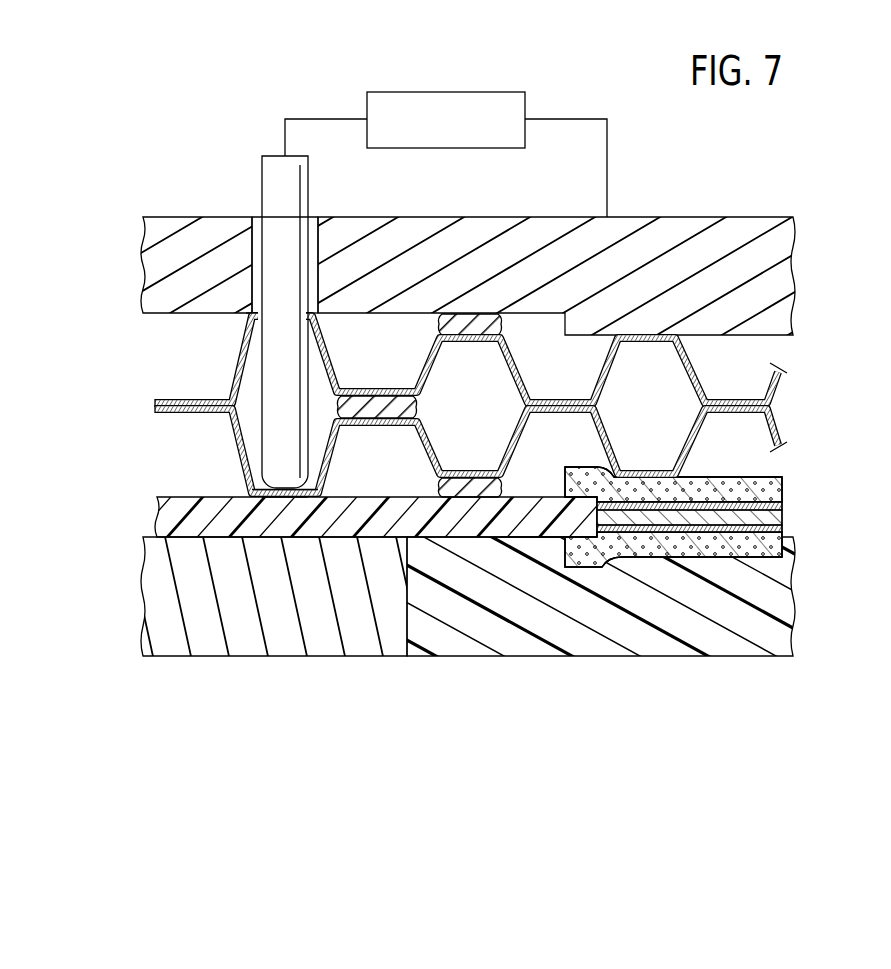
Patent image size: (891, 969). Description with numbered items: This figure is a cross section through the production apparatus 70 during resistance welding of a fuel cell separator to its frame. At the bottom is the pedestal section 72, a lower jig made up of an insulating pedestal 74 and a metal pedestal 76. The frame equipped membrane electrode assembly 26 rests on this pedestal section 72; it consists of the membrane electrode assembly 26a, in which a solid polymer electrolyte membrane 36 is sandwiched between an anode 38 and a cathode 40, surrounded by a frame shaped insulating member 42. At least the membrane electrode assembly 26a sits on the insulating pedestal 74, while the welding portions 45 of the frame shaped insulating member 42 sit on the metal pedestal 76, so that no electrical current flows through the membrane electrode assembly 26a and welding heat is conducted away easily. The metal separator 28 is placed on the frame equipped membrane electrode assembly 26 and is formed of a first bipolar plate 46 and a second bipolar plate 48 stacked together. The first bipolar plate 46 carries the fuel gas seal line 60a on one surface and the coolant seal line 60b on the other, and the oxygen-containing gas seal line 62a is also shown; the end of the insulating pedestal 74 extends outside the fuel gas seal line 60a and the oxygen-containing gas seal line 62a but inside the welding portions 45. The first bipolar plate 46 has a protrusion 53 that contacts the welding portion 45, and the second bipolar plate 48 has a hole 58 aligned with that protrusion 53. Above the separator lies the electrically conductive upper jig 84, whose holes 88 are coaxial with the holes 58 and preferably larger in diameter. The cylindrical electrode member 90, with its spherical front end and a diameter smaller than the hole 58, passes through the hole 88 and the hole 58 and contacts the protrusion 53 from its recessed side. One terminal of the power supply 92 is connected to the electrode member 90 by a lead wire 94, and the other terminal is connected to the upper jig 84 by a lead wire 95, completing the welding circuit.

The production apparatus 70 is at (798, 146).
The upper jig 84 is at (697, 218).
The holes 88 is at (312, 250).
The electrode member 90 is at (274, 156).
The power supply 92 is at (498, 100).
The lead wire 94 is at (353, 118).
The lead wire 95 is at (558, 118).
The metal separator 28 is at (426, 509).
The second bipolar plate 48 is at (230, 382).
The first bipolar plate 46 is at (230, 428).
The hole 58 is at (302, 318).
The protrusion 53 is at (287, 490).
The welding portion 45 is at (286, 493).
The fuel gas seal line 60a is at (468, 490).
The coolant seal line 60b is at (371, 394).
The oxygen-containing gas seal line 62a is at (471, 330).
The frame equipped membrane electrode assembly 26 is at (154, 506).
The frame shaped insulating member 42 is at (533, 523).
The membrane electrode assembly 26a is at (728, 517).
The anode 38 is at (787, 486).
The solid polymer electrolyte membrane 36 is at (768, 517).
The cathode 40 is at (787, 541).
The pedestal section 72 is at (445, 620).
The insulating pedestal 74 is at (580, 648).
The metal pedestal 76 is at (211, 657).